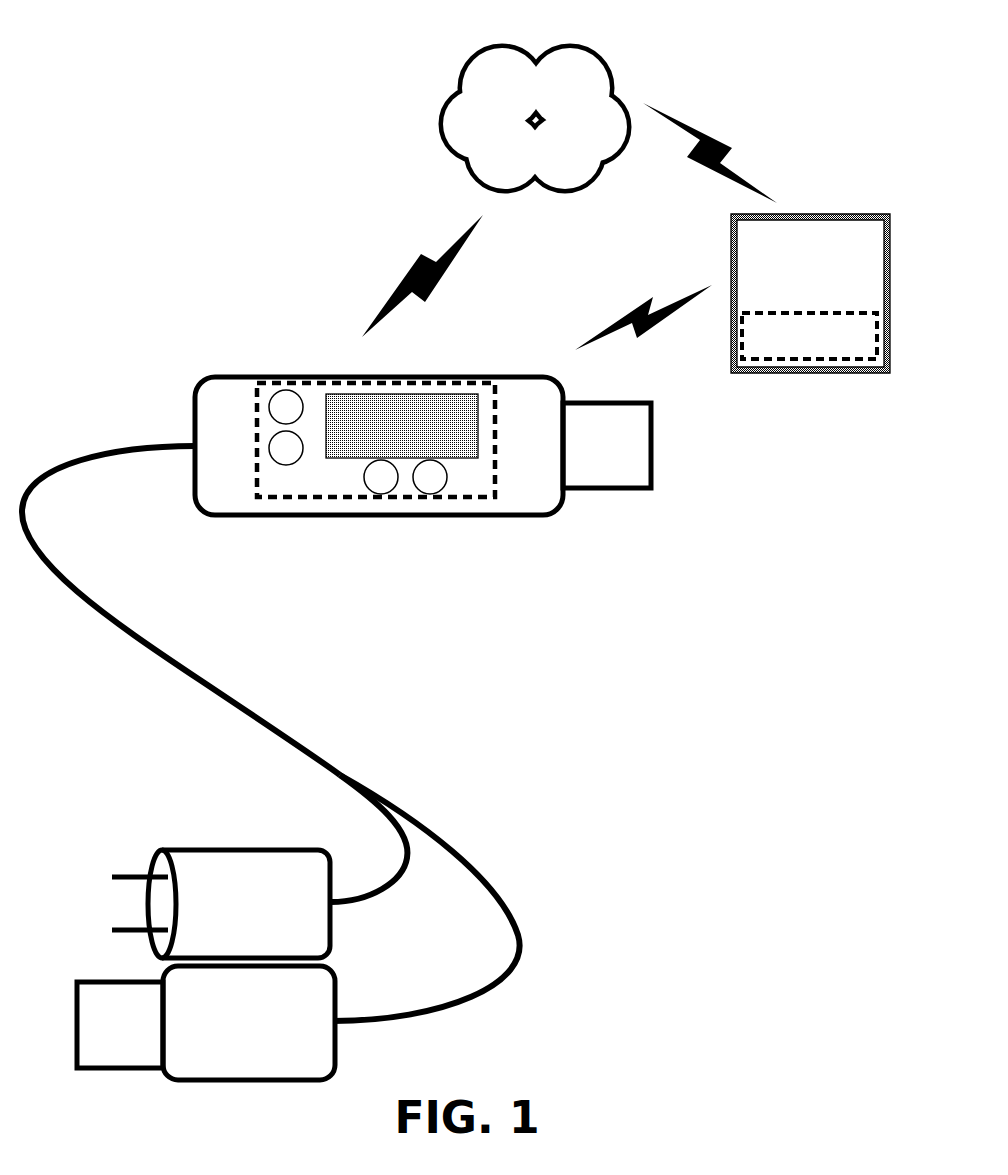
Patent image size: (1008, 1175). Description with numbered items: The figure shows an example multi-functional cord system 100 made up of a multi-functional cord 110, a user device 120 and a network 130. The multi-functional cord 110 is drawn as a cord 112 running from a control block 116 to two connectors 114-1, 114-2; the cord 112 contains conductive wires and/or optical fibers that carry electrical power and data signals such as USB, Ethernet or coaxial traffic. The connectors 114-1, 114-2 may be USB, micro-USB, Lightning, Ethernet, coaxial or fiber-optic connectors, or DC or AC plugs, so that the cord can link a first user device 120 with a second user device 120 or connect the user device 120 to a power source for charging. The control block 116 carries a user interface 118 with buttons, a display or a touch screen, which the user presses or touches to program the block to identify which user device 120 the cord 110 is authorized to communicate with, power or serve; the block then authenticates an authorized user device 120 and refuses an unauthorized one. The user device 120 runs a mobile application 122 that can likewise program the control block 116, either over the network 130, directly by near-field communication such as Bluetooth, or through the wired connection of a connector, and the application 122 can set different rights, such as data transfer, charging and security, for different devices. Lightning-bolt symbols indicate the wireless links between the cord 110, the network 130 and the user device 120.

The multi-functional cord system 100 is at (226, 36).
The multi-functional cord 110 is at (146, 355).
The cord 112 is at (135, 640).
The connector 114-1 is at (613, 490).
The connector 114-2 is at (165, 906).
The control block 116 is at (378, 517).
The user interface 118 is at (495, 384).
The user device 120 is at (816, 321).
The mobile application 122 is at (870, 362).
The network 130 is at (535, 118).